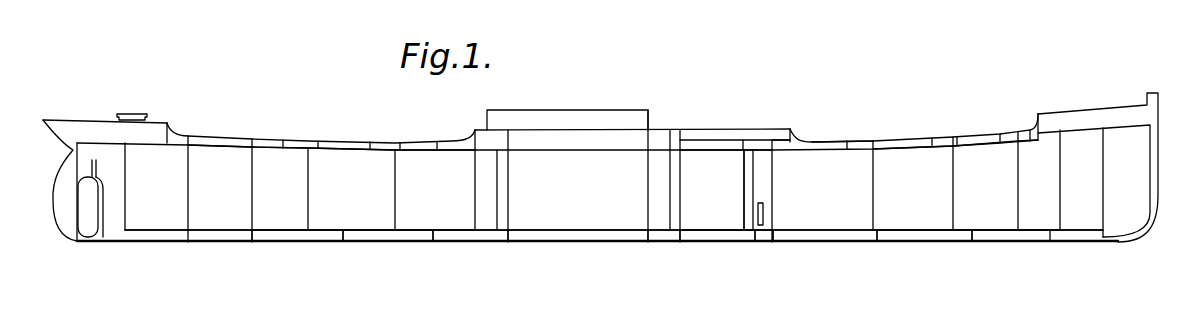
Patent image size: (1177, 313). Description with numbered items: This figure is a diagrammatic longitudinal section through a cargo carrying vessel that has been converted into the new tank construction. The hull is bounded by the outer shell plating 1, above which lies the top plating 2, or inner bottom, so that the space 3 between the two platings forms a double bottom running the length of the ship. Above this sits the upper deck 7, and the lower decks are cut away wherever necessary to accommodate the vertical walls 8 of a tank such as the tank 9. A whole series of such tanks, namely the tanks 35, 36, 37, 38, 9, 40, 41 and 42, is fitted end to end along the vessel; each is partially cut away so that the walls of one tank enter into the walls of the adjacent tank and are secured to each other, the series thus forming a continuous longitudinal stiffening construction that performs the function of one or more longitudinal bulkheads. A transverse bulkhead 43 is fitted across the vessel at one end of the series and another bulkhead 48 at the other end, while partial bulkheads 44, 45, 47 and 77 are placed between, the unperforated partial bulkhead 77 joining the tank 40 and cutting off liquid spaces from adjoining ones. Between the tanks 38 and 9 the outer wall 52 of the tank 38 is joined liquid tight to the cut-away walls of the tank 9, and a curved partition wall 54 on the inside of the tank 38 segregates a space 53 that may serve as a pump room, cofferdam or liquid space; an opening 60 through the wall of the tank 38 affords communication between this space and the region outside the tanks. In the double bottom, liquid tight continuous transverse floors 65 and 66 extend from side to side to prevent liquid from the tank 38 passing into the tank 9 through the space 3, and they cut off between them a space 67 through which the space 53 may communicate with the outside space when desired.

The outer shell plating 1 is at (473, 243).
The top plating 2 is at (355, 229).
The space between inner and outer platings 3 is at (382, 243).
The upper deck 7 is at (220, 148).
The vertical walls 8 is at (873, 188).
The tank 9 is at (840, 168).
The tank 35 is at (275, 170).
The tank 36 is at (353, 170).
The tank 37 is at (432, 172).
The tank 38 is at (702, 163).
The tank 40 is at (912, 165).
The tank 41 is at (985, 162).
The tank 42 is at (1043, 188).
The transverse bulk-head 43 is at (248, 235).
The partial bulk-head 44 is at (338, 235).
The partial bulk-head 45 is at (435, 235).
The partial bulk-head 47 is at (972, 235).
The bulk-head 48 is at (1050, 235).
The outer wall 52 is at (772, 170).
The space 53 is at (748, 198).
The curved partition wall 54 is at (748, 178).
The opening 60 is at (765, 208).
The transverse floor 65 is at (757, 233).
The transverse floor 66 is at (778, 237).
The space in the double bottom 67 is at (767, 235).
The unperforated partial bulk-head 77 is at (877, 235).